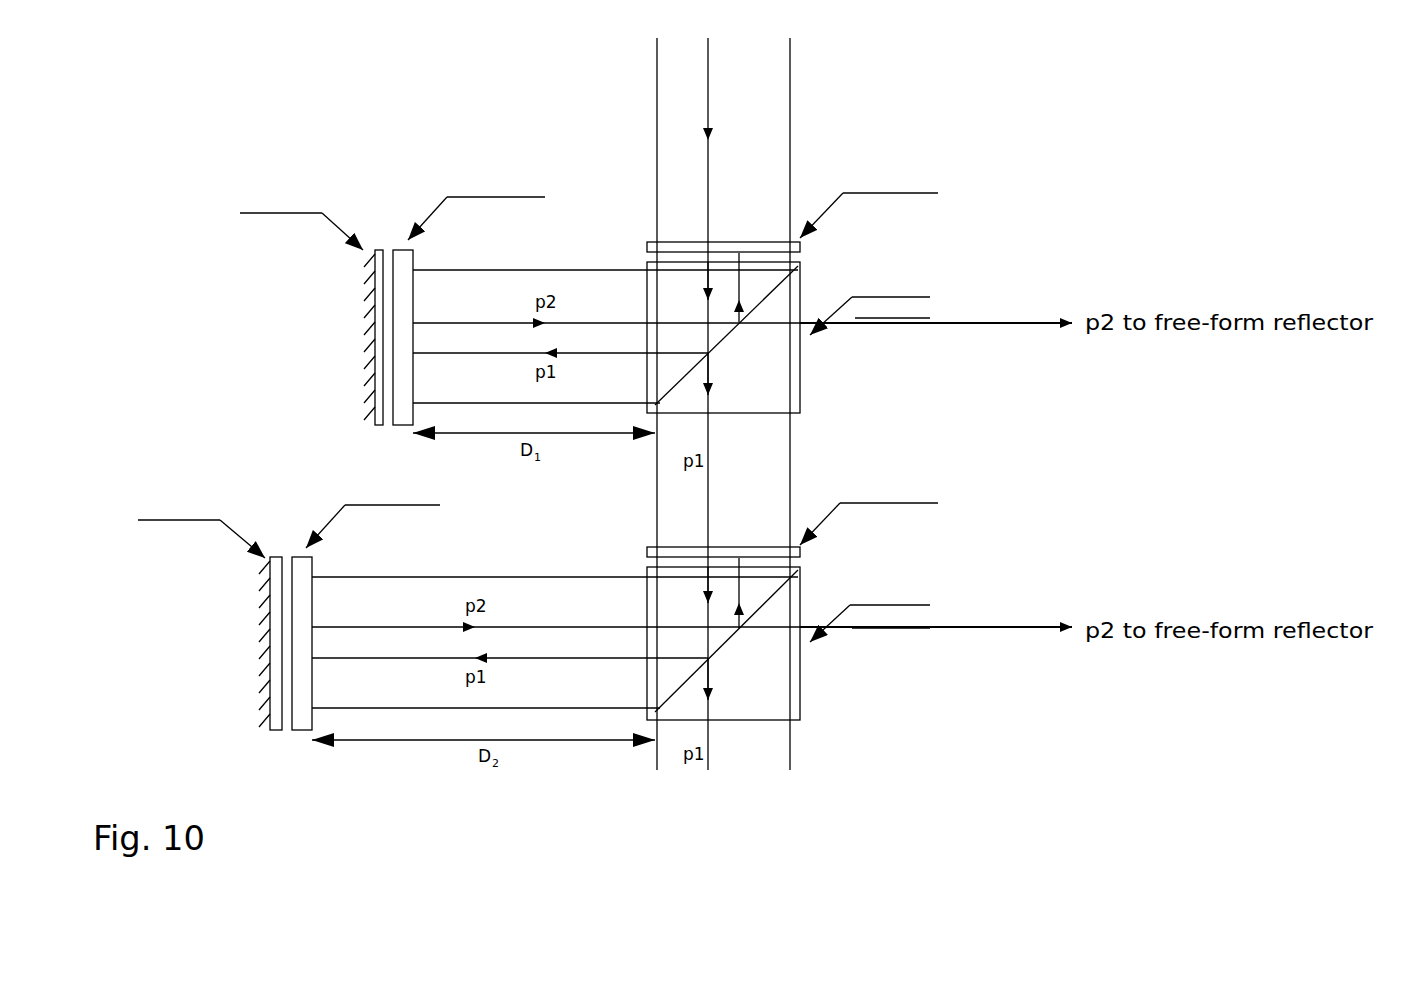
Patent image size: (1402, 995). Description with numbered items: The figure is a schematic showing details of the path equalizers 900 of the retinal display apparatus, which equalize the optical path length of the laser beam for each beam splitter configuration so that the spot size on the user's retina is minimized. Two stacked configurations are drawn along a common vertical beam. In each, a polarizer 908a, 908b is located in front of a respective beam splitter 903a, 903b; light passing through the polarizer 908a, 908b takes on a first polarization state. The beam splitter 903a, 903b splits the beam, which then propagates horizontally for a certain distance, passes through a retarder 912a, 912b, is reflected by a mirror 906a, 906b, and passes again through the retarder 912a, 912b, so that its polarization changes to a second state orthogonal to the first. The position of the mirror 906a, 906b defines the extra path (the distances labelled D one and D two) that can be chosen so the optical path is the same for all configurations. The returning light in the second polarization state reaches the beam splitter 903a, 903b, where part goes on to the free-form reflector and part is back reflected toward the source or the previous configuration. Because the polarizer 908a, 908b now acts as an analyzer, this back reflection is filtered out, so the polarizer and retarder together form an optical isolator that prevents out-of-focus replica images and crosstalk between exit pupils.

The path equalizer 900 is at (220, 100).
The mirror 906a is at (372, 250).
The retarder 912a is at (413, 258).
The polarizer 908a is at (750, 242).
The beam splitter 903a is at (738, 330).
The mirror 906b is at (276, 555).
The retarder 912b is at (312, 563).
The polarizer 908b is at (748, 548).
The beam splitter 903b is at (738, 635).